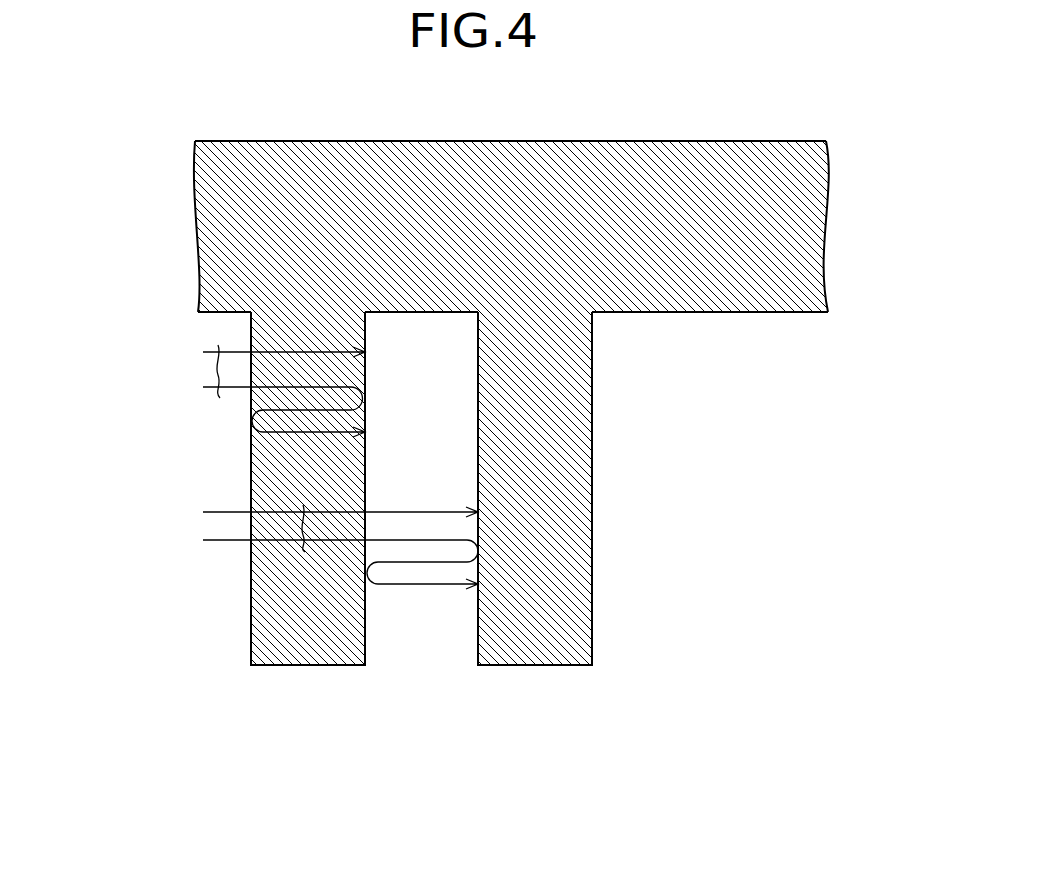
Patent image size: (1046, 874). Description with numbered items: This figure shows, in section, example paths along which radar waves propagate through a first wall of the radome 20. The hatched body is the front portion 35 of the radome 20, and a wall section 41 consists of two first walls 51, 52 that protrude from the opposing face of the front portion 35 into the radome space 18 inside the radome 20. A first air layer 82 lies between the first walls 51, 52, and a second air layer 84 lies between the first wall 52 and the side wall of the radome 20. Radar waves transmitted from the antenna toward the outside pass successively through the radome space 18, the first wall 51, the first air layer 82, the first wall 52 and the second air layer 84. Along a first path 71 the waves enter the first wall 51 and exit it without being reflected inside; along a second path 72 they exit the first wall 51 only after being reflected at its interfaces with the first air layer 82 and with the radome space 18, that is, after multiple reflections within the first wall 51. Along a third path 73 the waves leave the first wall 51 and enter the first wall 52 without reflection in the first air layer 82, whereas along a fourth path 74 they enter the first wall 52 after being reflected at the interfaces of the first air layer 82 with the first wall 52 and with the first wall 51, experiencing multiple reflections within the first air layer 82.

The radome space 18 is at (238, 314).
The radome 20 is at (523, 453).
The front portion 35 is at (503, 160).
The first air layer 82 is at (445, 313).
The second air layer 84 is at (645, 315).
The first path 71 is at (337, 349).
The second path 72 is at (287, 433).
The third path 73 is at (385, 510).
The fourth path 74 is at (400, 588).
The first wall 51 is at (308, 542).
The first wall 52 is at (547, 667).
The wall section 41 is at (421, 577).